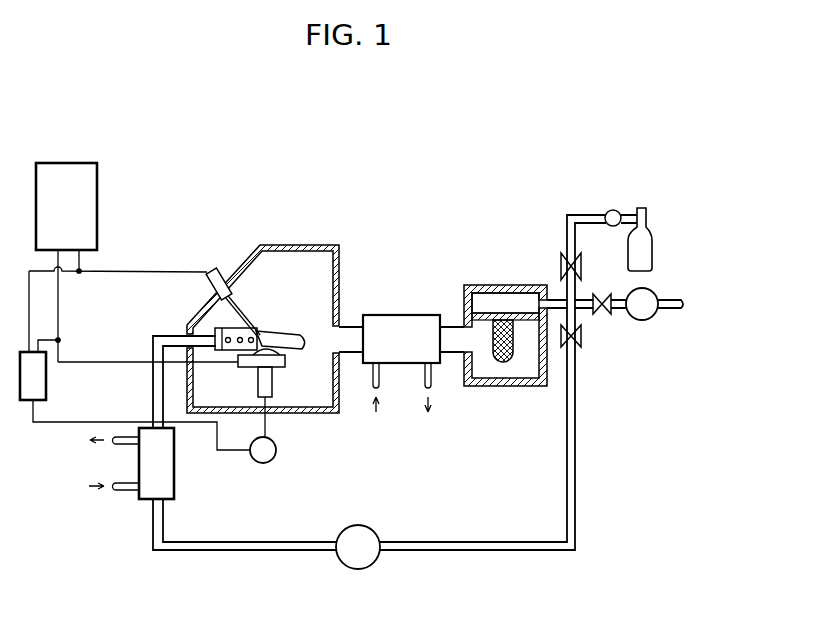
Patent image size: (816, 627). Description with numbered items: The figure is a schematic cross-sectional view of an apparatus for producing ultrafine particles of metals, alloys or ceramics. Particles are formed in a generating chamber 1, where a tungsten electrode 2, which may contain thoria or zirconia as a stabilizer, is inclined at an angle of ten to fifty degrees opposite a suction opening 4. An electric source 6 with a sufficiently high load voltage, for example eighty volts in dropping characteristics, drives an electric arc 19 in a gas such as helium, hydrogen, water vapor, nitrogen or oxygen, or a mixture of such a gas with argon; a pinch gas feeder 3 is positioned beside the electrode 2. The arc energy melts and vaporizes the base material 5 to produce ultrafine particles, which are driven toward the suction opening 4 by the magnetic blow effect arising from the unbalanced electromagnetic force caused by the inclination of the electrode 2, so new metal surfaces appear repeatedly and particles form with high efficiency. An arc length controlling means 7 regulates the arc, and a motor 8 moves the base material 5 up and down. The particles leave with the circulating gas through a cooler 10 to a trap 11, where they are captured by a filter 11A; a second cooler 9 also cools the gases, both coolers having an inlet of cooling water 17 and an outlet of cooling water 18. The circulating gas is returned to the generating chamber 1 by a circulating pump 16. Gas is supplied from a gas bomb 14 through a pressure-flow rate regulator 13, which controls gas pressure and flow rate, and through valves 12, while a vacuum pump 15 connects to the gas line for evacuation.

The generating chamber 1 is at (305, 245).
The electrode 2 is at (235, 302).
The pinch gas feeder 3 is at (266, 328).
The suction opening 4 is at (330, 348).
The base material 5 is at (286, 353).
The electric source 6 is at (66, 163).
The arc length controlling means 7 is at (46, 384).
The motor 8 is at (277, 447).
The cooler 9 is at (174, 480).
The cooler 10 is at (398, 315).
The trap 11 is at (496, 285).
The filter 11A is at (510, 362).
The valve 12 is at (565, 253).
The pressure-flow rate regulator 13 is at (612, 210).
The gas bomb 14 is at (652, 241).
The vacuum pump 15 is at (645, 320).
The circulating pump 16 is at (375, 527).
The inlet of cooling water 17 is at (246, 432).
The outlet of cooling water 18 is at (251, 408).
The electric arc 19 is at (292, 334).